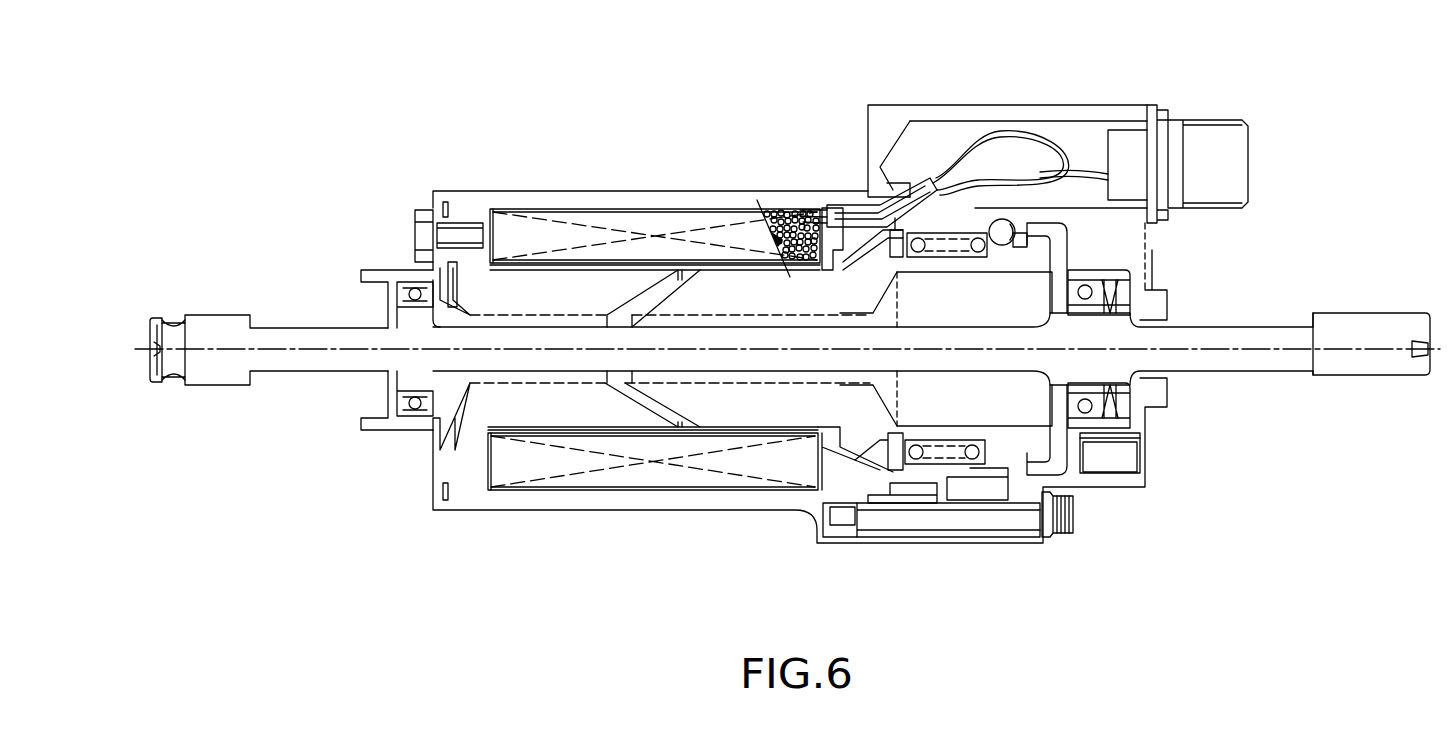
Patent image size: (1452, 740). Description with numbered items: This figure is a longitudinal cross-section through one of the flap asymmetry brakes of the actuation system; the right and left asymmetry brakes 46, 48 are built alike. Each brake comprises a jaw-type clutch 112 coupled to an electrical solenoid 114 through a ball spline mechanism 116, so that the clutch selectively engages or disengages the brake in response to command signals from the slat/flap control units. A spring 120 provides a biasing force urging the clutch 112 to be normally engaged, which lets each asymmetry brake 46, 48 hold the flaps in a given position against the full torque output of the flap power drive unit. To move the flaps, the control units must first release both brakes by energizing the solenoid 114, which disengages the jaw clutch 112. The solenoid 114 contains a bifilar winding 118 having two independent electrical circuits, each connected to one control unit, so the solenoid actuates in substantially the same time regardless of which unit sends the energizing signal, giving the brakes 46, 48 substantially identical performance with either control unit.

The right flap asymmetry brake 46 is at (616, 100).
The left flap asymmetry brake 48 is at (616, 100).
The jaw-type clutch 112 is at (1077, 463).
The electrical solenoid 114 is at (693, 478).
The ball spline mechanism 116 is at (1002, 225).
The bifilar winding 118 is at (805, 208).
The spring 120 is at (938, 457).